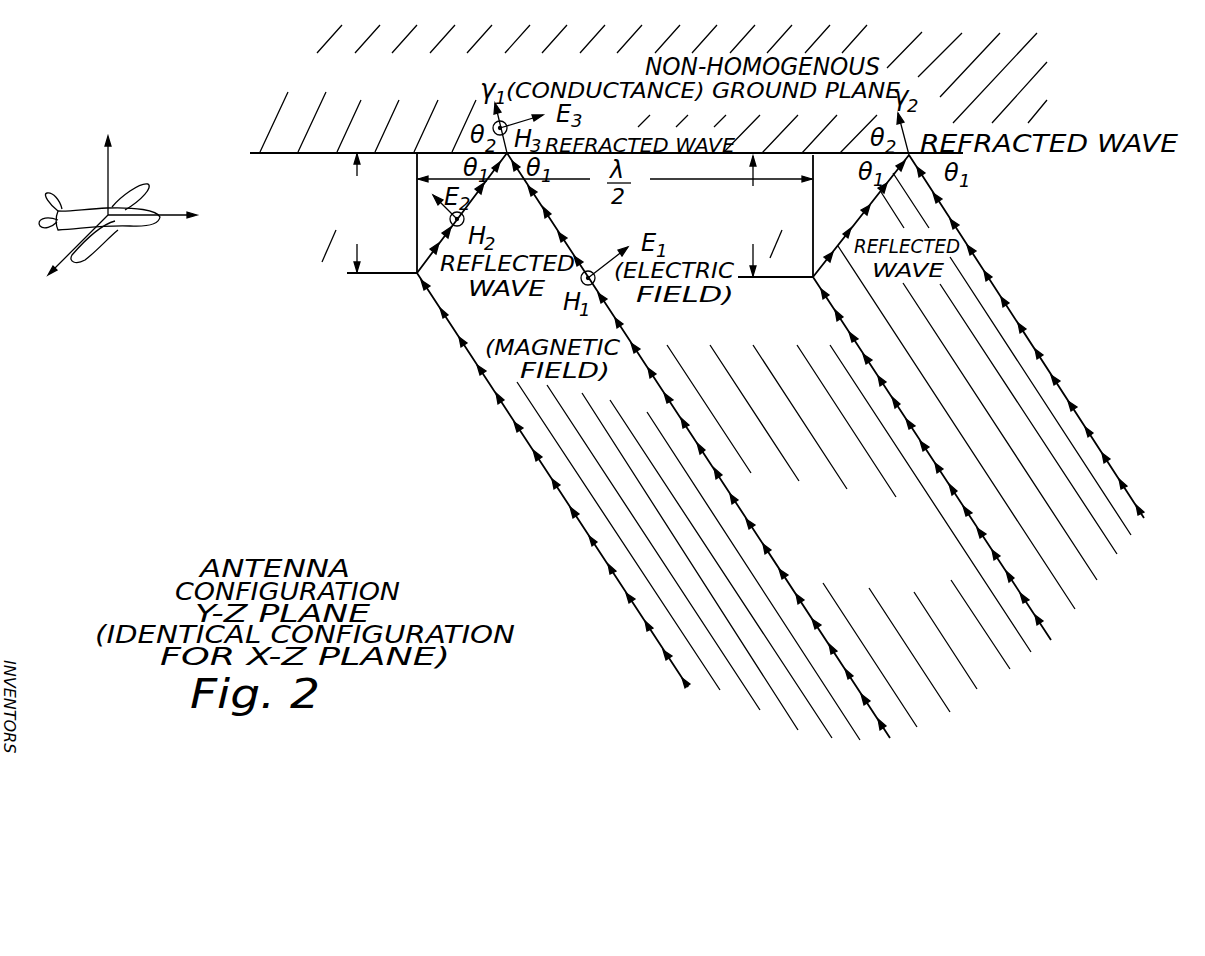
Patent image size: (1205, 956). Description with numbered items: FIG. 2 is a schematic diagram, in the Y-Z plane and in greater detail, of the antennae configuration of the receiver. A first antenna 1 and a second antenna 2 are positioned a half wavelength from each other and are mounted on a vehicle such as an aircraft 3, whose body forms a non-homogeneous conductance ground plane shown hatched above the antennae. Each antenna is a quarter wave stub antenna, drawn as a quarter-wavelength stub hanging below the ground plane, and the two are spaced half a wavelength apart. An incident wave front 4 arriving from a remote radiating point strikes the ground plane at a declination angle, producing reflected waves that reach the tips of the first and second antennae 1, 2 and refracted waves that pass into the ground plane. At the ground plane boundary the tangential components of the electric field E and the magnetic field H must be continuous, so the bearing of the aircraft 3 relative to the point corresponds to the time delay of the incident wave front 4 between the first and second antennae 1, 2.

The first antenna 1 is at (416, 247).
The second antenna 2 is at (810, 256).
The aircraft 3 is at (425, 88).
The incident wave front from point 4 is at (780, 421).